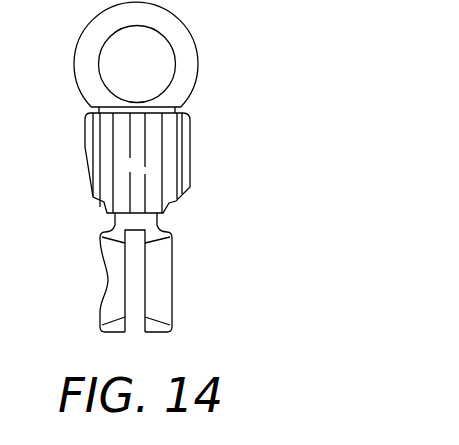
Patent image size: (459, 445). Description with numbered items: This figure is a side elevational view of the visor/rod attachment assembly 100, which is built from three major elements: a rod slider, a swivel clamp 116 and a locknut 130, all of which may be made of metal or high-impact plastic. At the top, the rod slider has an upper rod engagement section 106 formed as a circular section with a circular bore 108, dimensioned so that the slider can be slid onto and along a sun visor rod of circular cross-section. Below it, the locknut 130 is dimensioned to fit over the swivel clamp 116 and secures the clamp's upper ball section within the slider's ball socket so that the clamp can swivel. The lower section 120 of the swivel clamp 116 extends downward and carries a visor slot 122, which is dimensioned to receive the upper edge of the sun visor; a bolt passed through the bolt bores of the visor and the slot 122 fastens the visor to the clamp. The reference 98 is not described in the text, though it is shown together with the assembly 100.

The fastener 98 is at (209, 103).
The visor/rod attachment assembly 100 is at (178, 167).
The upper rod engagement section 106 is at (163, 18).
The circular bore 108 is at (157, 62).
The locknut 130 is at (158, 162).
The swivel clamp 116 is at (197, 222).
The slot 122 is at (135, 278).
The lower section 120 is at (157, 312).